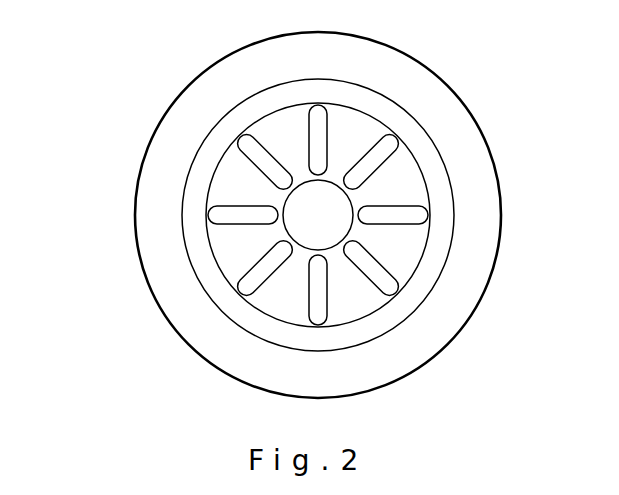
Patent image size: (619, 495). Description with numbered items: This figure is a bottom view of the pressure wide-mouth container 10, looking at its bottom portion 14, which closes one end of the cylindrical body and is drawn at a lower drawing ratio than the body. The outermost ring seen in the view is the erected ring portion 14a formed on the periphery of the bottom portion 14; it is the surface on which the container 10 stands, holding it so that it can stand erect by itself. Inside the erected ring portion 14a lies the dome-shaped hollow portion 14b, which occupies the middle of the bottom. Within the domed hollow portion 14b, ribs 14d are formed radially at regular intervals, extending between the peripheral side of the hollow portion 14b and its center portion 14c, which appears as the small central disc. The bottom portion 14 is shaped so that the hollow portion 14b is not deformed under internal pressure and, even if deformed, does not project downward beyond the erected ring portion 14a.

The container 10 is at (128, 97).
The bottom portion 14 is at (142, 308).
The erected ring portion 14a is at (407, 302).
The dome-shaped hollow portion 14b is at (405, 167).
The center portion 14c is at (366, 132).
The ribs 14d is at (402, 205).